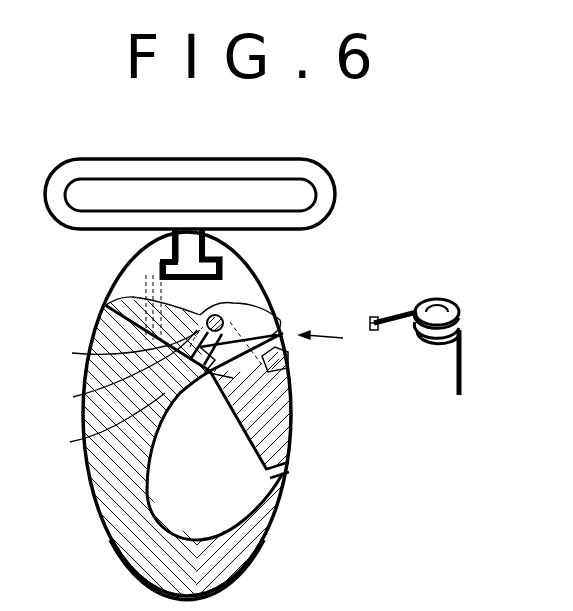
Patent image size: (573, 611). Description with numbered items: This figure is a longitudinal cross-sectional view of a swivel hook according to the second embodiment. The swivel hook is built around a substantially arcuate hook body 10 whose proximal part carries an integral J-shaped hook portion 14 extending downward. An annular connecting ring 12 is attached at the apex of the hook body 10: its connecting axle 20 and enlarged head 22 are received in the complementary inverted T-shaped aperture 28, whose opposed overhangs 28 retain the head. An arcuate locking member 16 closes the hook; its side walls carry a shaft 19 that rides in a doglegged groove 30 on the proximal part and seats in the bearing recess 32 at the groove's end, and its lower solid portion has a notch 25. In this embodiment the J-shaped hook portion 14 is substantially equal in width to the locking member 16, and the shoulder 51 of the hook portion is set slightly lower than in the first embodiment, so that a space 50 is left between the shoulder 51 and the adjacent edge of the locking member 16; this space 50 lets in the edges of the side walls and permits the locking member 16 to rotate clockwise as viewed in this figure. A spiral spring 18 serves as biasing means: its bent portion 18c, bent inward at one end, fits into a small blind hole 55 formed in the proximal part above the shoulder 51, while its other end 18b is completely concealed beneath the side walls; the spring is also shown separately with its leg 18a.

The hook body 10 is at (103, 546).
The connecting ring 12 is at (276, 150).
The J-shaped hook portion 14 is at (212, 591).
The locking member 16 is at (292, 435).
The spiral spring 18 is at (284, 364).
The spring leg 18a is at (461, 366).
The other end of spring 18b is at (386, 312).
The bent portion 18c is at (374, 328).
The shaft 19 is at (110, 303).
The connecting axle 20 is at (177, 246).
The enlarged head 22 is at (206, 273).
The notch 25 is at (289, 387).
The inverted T-shaped aperture 28 is at (166, 250).
The doglegged groove 30 is at (211, 373).
The bearing recess 32 is at (278, 304).
The space 50 is at (97, 426).
The shoulder 51 is at (120, 350).
The small blind hole 55 is at (114, 372).